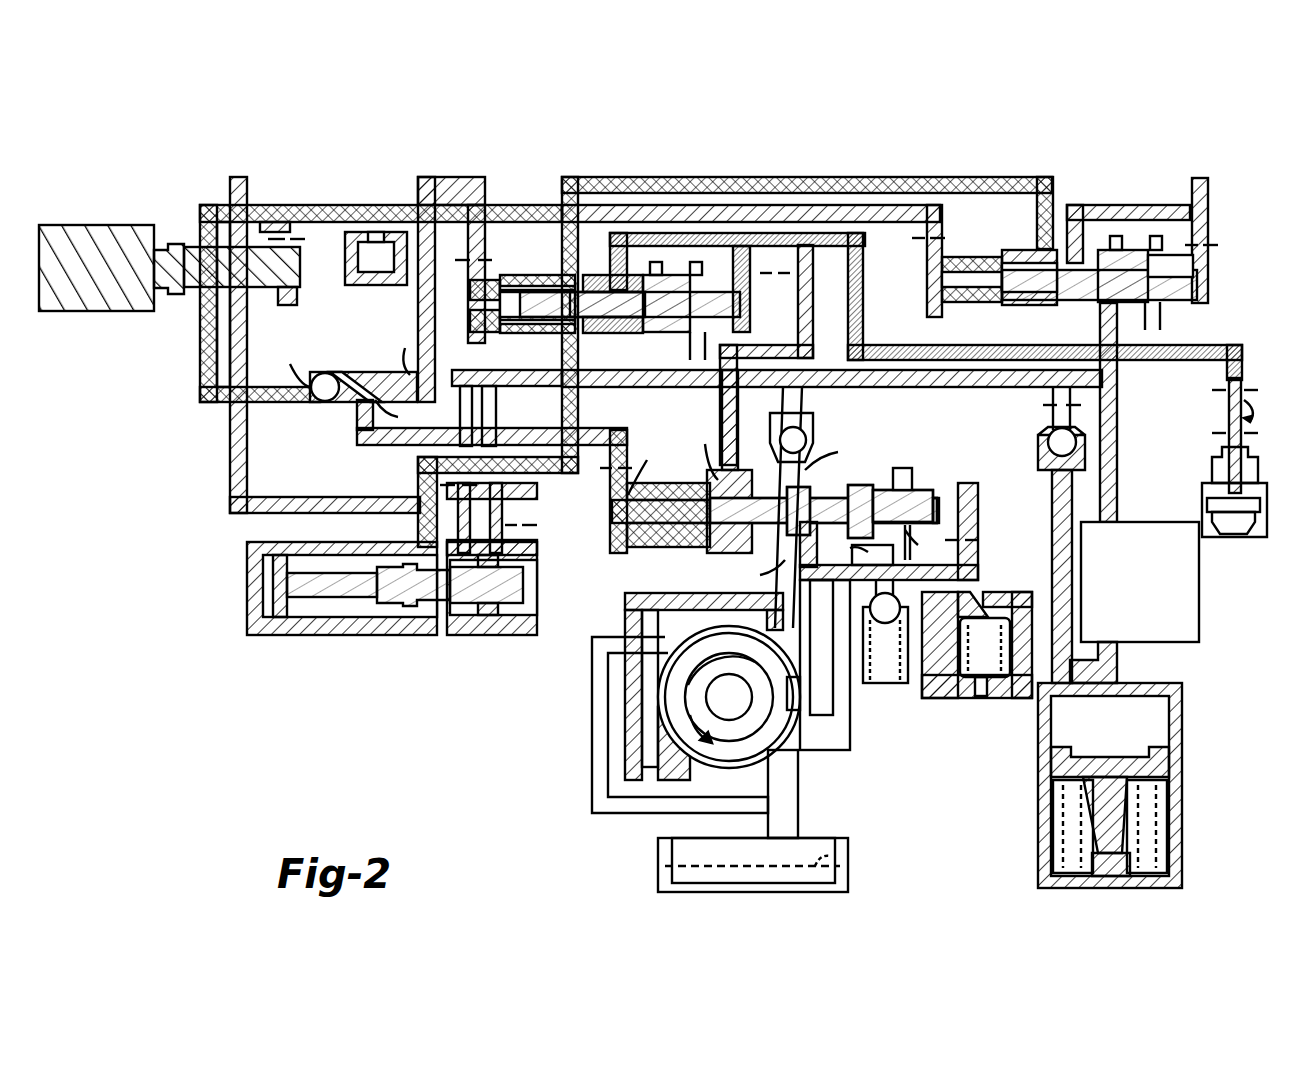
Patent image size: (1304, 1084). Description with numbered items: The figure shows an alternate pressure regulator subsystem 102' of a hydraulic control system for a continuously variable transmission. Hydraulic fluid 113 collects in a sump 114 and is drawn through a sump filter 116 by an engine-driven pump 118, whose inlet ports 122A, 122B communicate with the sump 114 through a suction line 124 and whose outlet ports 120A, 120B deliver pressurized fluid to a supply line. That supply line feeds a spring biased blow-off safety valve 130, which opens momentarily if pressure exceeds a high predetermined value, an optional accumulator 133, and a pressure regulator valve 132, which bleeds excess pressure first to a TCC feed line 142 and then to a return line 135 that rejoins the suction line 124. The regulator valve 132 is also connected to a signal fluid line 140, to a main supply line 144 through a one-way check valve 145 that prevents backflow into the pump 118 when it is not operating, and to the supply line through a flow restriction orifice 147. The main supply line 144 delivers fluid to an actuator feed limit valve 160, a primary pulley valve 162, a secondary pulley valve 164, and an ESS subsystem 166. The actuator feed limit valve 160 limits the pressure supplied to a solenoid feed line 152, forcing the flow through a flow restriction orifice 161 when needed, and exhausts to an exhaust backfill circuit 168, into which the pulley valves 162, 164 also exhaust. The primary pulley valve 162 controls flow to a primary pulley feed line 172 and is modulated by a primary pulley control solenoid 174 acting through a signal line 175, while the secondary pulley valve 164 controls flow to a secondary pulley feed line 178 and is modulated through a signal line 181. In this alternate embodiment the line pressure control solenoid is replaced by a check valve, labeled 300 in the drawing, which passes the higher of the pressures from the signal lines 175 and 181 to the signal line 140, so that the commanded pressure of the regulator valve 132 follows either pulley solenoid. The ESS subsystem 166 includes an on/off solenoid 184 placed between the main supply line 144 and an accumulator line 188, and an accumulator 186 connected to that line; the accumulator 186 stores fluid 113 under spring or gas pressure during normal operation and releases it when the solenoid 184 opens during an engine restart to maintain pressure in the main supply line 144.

The alternate pressure regulator subsystem 102' is at (1200, 95).
The hydraulic fluid 113 is at (840, 866).
The sump 114 is at (658, 860).
The sump filter 116 is at (730, 838).
The pump 118 is at (650, 675).
The outlet port 120A is at (770, 640).
The outlet port 120B is at (670, 745).
The inlet port 122A is at (785, 740).
The inlet port 122B is at (668, 650).
The suction line 124 is at (800, 803).
The spring biased blow-off safety valve 130 is at (905, 692).
The pressure regulator valve 132 is at (925, 475).
The accumulator 133 is at (995, 595).
The return line 135 is at (850, 745).
The signal fluid line 140 is at (627, 387).
The TCC feed line 142 is at (798, 320).
The main supply line 144 is at (950, 387).
The one-way check valve 145 is at (815, 418).
The flow restriction orifice 147 is at (978, 538).
The solenoid feed line 152 is at (230, 458).
The actuator feed limit valve 160 is at (303, 595).
The flow restriction orifice 161 is at (500, 485).
The primary pulley valve 162 is at (1178, 302).
The secondary pulley valve 164 is at (515, 325).
The ESS subsystem 166 is at (1215, 695).
The exhaust backfill circuit 168 is at (578, 473).
The primary pulley feed line 172 is at (1118, 205).
The primary pulley control solenoid 174 is at (80, 313).
The signal line 175 is at (332, 205).
The secondary pulley feed line 178 is at (1162, 362).
The signal line 181 is at (485, 247).
The on/off solenoid 184 is at (1200, 583).
The accumulator 186 is at (1182, 808).
The accumulator line 188 is at (1117, 665).
The valve assembly 300 is at (335, 428).